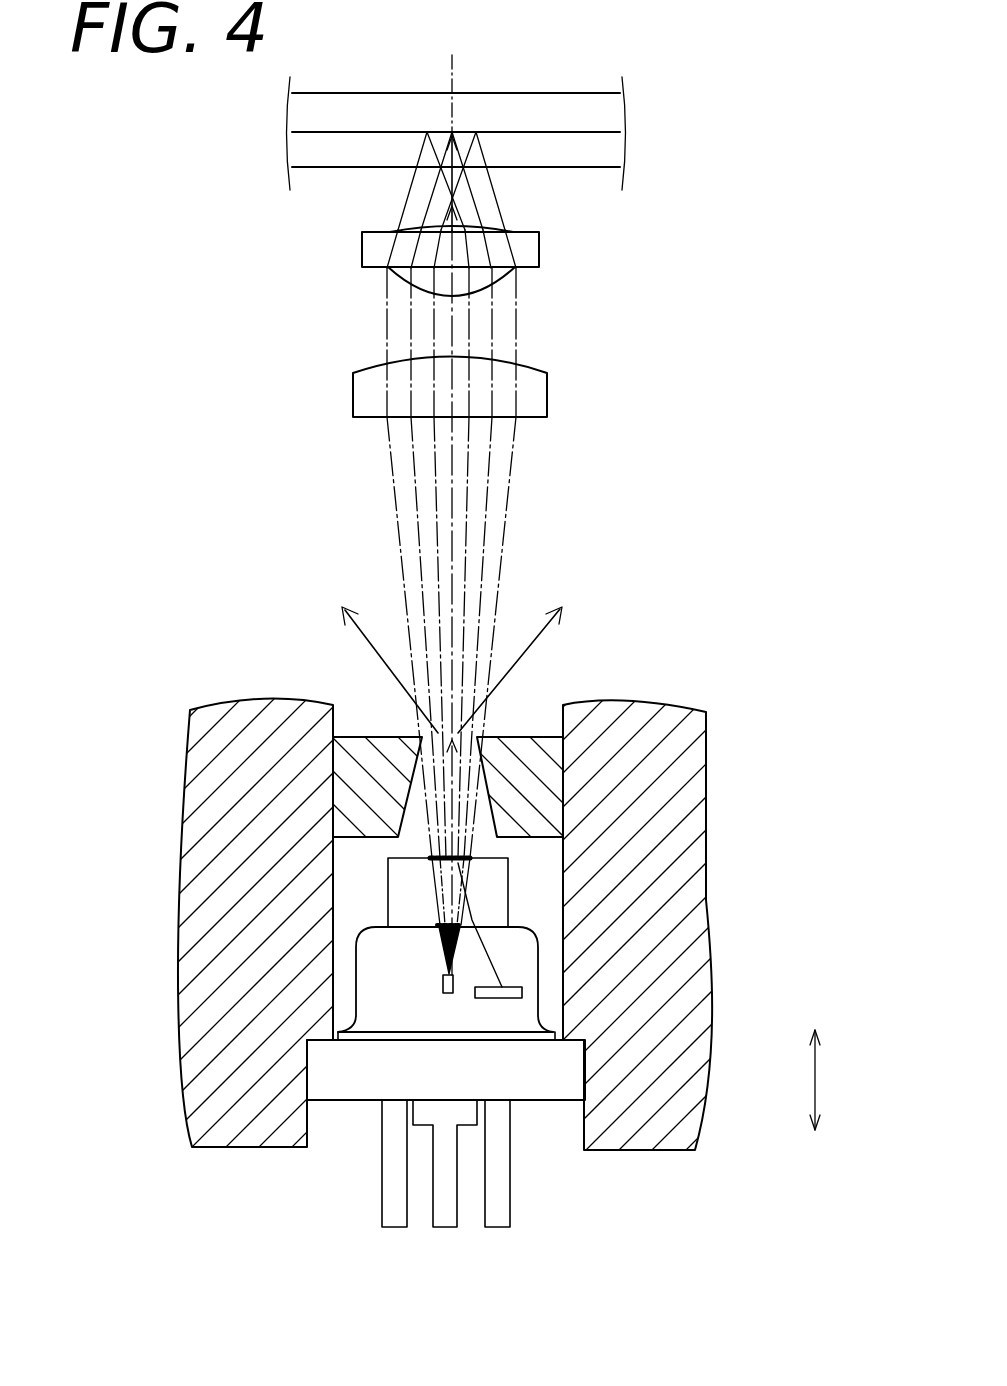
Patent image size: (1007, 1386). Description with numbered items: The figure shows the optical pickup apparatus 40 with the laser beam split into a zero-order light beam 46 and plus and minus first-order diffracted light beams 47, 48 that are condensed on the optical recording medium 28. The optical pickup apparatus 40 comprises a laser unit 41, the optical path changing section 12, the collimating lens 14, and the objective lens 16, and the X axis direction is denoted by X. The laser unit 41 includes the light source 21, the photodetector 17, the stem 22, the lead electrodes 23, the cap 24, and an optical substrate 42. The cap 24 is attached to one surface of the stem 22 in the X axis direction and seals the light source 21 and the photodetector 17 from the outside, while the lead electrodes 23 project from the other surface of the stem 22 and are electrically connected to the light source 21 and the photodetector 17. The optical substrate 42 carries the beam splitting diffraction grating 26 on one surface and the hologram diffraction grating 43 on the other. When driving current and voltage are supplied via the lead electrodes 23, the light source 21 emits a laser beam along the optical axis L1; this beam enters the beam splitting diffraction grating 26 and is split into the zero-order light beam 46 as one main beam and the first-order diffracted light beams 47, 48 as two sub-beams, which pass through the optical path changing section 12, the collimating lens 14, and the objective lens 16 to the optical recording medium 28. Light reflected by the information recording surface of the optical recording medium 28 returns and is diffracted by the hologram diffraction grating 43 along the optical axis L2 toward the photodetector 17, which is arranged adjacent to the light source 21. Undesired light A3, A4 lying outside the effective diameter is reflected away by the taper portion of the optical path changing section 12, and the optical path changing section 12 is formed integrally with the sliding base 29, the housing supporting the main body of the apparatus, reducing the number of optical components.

The optical path changing section 12 is at (513, 731).
The collimating lens 14 is at (536, 402).
The objective lens 16 is at (540, 258).
The photodetector 17 is at (502, 998).
The light source 21 is at (441, 988).
The stem 22 is at (340, 1090).
The lead electrodes 23 is at (495, 1227).
The cap 24 is at (378, 942).
The beam splitting diffraction grating 26 is at (442, 903).
The optical recording medium 28 is at (344, 105).
The sliding base 29 is at (200, 762).
The optical pickup apparatus 40 is at (735, 215).
The laser unit 41 is at (571, 1213).
The optical substrate 42 is at (499, 898).
The hologram diffraction grating 43 is at (466, 860).
The zero-order light beam 46 is at (468, 192).
The + first-order diffracted light beam 47 is at (407, 202).
The − first-order diffracted light beam 48 is at (500, 213).
The optical axis L1 is at (458, 66).
The optical axis L2 is at (471, 960).
The undesired light A3 is at (535, 640).
The undesired light A4 is at (370, 641).
The X axis direction X is at (816, 1082).